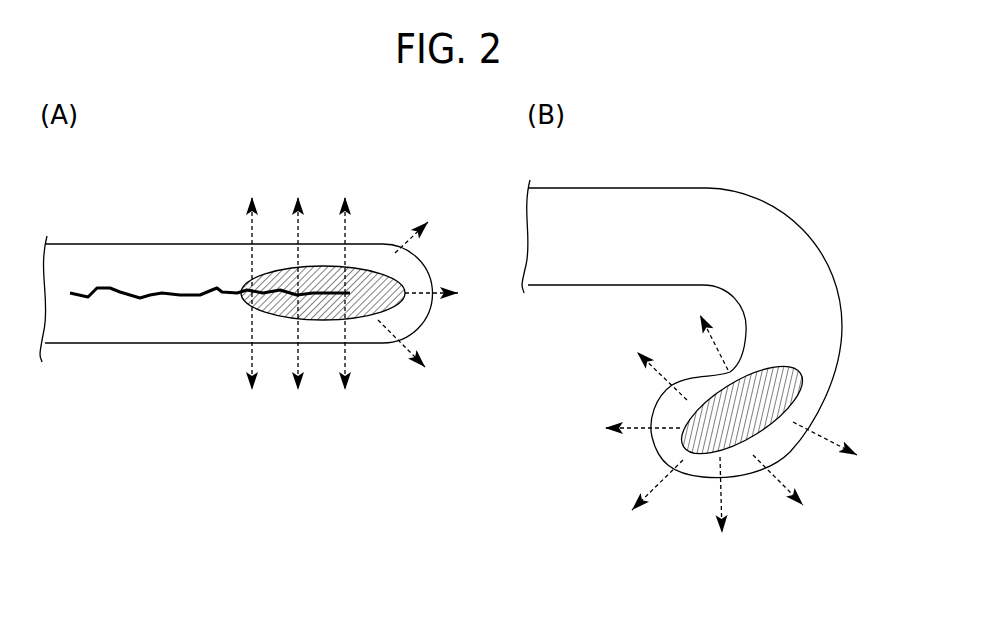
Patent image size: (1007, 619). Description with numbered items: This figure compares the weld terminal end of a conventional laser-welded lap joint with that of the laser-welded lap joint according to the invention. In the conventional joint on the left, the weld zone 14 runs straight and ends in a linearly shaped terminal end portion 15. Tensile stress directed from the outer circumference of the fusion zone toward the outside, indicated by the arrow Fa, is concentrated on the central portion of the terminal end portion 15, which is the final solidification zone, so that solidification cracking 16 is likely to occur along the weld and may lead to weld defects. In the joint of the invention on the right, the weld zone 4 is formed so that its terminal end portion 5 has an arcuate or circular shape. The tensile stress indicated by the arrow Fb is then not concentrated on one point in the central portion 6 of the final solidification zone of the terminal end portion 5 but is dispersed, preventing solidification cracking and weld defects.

The weld zone 14 is at (108, 263).
The solidification cracking 16 is at (87, 297).
The terminal end portion 15 is at (320, 321).
The arrow Fa is at (250, 353).
The weld zone 4 is at (693, 213).
The terminal end portion 5 is at (735, 447).
The central portion 6 is at (740, 408).
The arrow Fb is at (662, 378).